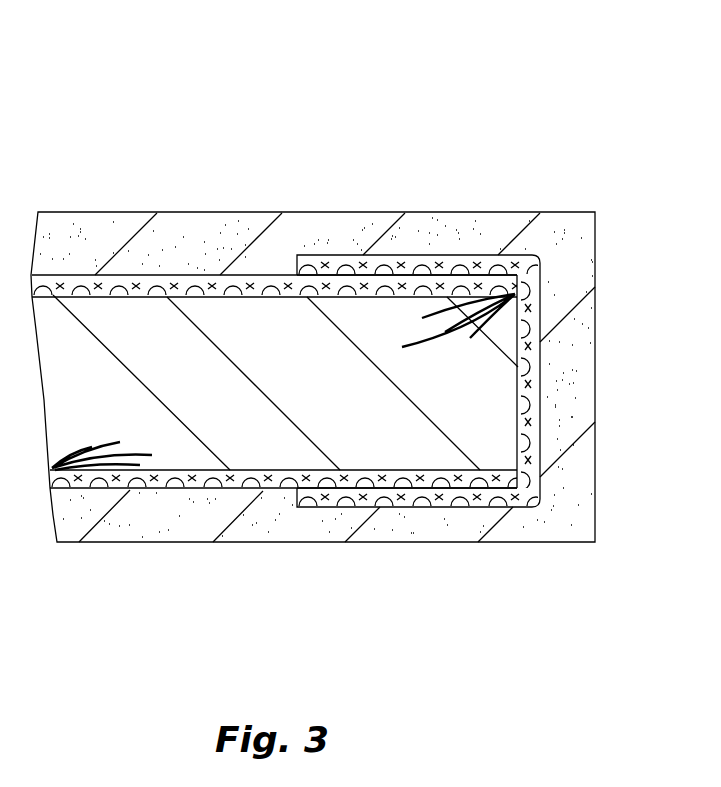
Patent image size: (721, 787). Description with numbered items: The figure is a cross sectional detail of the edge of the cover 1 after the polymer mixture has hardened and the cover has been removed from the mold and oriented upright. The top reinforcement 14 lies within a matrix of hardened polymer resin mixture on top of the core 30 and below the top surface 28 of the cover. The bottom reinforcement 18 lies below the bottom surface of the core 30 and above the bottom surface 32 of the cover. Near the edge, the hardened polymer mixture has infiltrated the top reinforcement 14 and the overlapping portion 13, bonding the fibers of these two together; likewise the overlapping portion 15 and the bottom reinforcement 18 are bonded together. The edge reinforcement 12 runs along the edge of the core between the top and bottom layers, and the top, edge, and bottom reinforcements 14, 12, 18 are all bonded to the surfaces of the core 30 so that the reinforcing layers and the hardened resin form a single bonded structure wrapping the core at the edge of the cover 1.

The cover 1 is at (76, 143).
The edge reinforcement 12 is at (543, 405).
The overlapping portion 13 is at (369, 257).
The top reinforcement 14 is at (178, 296).
The overlapping portion 15 is at (410, 508).
The bottom reinforcement 18 is at (250, 478).
The top surface 28 is at (483, 212).
The core 30 is at (167, 433).
The bottom surface 32 is at (510, 544).